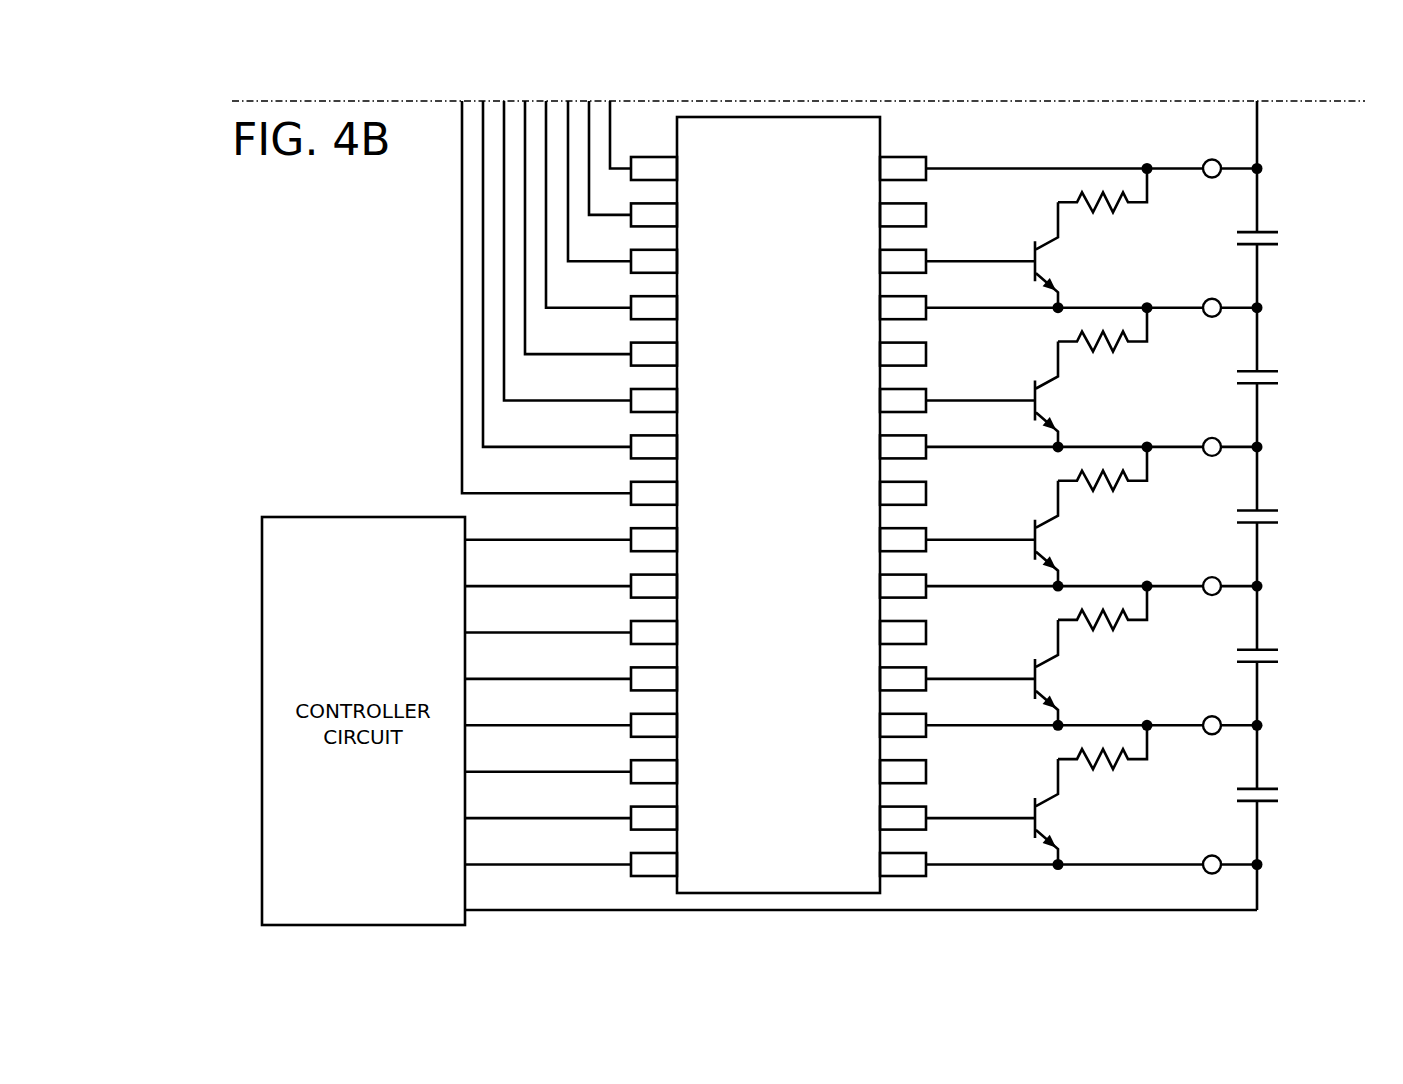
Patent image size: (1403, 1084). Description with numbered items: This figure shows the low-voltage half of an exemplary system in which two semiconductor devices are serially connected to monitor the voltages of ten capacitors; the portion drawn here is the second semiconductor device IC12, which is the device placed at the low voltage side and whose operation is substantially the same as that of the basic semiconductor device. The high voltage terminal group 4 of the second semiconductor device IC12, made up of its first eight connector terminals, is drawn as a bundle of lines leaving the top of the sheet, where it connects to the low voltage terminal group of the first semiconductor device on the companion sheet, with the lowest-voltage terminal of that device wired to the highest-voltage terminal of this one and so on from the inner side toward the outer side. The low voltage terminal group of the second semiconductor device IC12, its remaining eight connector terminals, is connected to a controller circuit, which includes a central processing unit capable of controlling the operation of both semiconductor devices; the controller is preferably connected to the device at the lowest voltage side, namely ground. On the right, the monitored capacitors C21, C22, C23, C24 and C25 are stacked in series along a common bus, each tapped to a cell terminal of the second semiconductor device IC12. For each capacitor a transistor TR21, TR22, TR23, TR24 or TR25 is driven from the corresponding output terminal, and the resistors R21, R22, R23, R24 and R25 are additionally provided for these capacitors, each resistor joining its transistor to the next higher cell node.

The high voltage terminal group 4 is at (449, 253).
The second semiconductor device IC12 is at (778, 505).
The transistor TR21 is at (992, 254).
The transistor TR22 is at (992, 394).
The transistor TR23 is at (992, 533).
The transistor TR24 is at (992, 672).
The transistor TR25 is at (992, 811).
The resistor R21 is at (1102, 205).
The resistor R22 is at (1102, 344).
The resistor R23 is at (1102, 483).
The resistor R24 is at (1102, 622).
The resistor R25 is at (1102, 761).
The capacitor C21 is at (1279, 239).
The capacitor C22 is at (1279, 378).
The capacitor C23 is at (1279, 517).
The capacitor C24 is at (1279, 657).
The capacitor C25 is at (1279, 796).